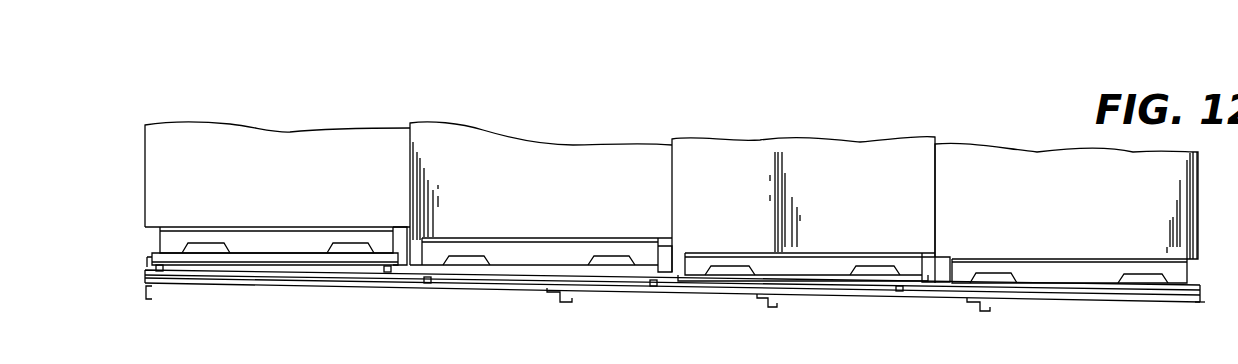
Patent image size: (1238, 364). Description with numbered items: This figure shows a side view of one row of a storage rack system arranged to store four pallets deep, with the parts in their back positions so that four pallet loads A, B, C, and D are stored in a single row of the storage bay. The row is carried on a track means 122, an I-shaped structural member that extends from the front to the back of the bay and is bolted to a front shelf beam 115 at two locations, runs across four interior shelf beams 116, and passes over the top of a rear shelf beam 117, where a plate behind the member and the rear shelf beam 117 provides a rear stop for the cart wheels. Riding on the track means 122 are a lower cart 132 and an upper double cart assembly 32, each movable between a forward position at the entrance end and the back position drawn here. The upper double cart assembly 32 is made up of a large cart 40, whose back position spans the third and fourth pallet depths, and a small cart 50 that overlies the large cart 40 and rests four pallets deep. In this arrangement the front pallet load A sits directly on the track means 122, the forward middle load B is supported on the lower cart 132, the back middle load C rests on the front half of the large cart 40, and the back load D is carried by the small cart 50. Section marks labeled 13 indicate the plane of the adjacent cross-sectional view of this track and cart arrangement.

The upright frame 13 is at (205, 185).
The upper double cart assembly 32 is at (531, 283).
The large cart 40 is at (472, 273).
The small cart 50 is at (362, 271).
The front shelf beam 115 is at (1195, 302).
The interior shelf beams 116 is at (568, 298).
The rear shelf beam 117 is at (148, 289).
The track means 122 is at (317, 287).
The lower cart 132 is at (814, 279).
The front pallet load A is at (1028, 146).
The forward middle pallet load B is at (798, 133).
The back middle pallet load C is at (526, 127).
The back pallet load D is at (288, 119).